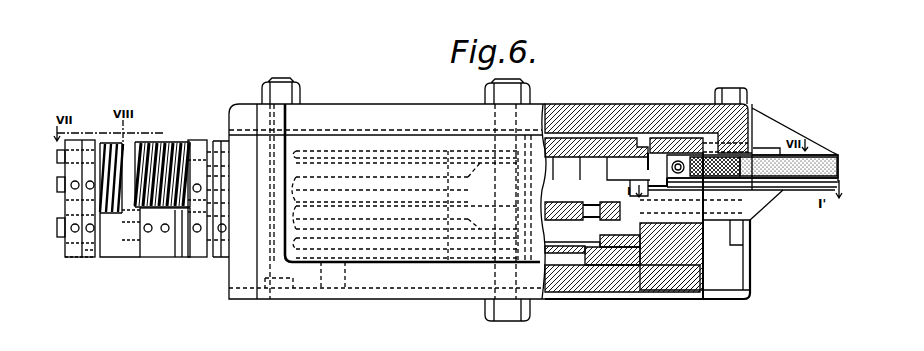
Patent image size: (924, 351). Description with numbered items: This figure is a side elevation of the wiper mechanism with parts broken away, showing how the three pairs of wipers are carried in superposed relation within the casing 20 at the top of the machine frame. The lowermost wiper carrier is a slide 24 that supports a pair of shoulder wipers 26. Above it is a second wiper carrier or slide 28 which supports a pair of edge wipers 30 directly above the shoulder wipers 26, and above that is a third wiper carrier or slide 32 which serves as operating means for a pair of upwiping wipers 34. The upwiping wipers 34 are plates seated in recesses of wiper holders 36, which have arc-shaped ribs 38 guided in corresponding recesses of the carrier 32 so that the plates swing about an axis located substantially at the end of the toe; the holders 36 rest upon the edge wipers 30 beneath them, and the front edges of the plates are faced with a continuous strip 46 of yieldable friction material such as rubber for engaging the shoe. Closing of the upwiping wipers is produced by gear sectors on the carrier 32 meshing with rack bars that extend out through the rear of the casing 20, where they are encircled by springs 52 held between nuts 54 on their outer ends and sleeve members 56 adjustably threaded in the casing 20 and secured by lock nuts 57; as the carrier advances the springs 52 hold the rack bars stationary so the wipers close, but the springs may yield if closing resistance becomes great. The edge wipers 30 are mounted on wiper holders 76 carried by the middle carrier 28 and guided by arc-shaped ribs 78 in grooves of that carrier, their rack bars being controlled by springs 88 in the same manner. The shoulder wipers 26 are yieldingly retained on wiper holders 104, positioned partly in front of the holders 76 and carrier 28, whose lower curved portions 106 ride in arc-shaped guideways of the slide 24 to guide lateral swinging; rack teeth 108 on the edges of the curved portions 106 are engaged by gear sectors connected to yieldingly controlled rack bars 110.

The casing 20 is at (372, 143).
The slide 24 is at (597, 258).
The shoulder wipers 26 is at (800, 184).
The second wiper carrier or slide 28 is at (572, 240).
The edge wipers 30 is at (782, 187).
The third wiper carrier or slide 32 is at (567, 147).
The upwiping wipers 34 is at (692, 160).
The wiper holders 36 is at (652, 165).
The arc-shaped ribs 38 is at (645, 172).
The strip of yieldable friction material 46 is at (823, 155).
The springs 52 is at (127, 238).
The nuts 54 is at (92, 141).
The sleeve members 56 is at (197, 139).
The lock nuts 57 is at (226, 141).
The wiper holders 76 is at (575, 192).
The arc-shaped ribs 78 is at (568, 215).
The springs 88 is at (105, 190).
The wiper holders 104 is at (690, 217).
The curved portions 106 is at (640, 237).
The rack teeth 108 is at (613, 238).
The rack bars 110 is at (130, 215).